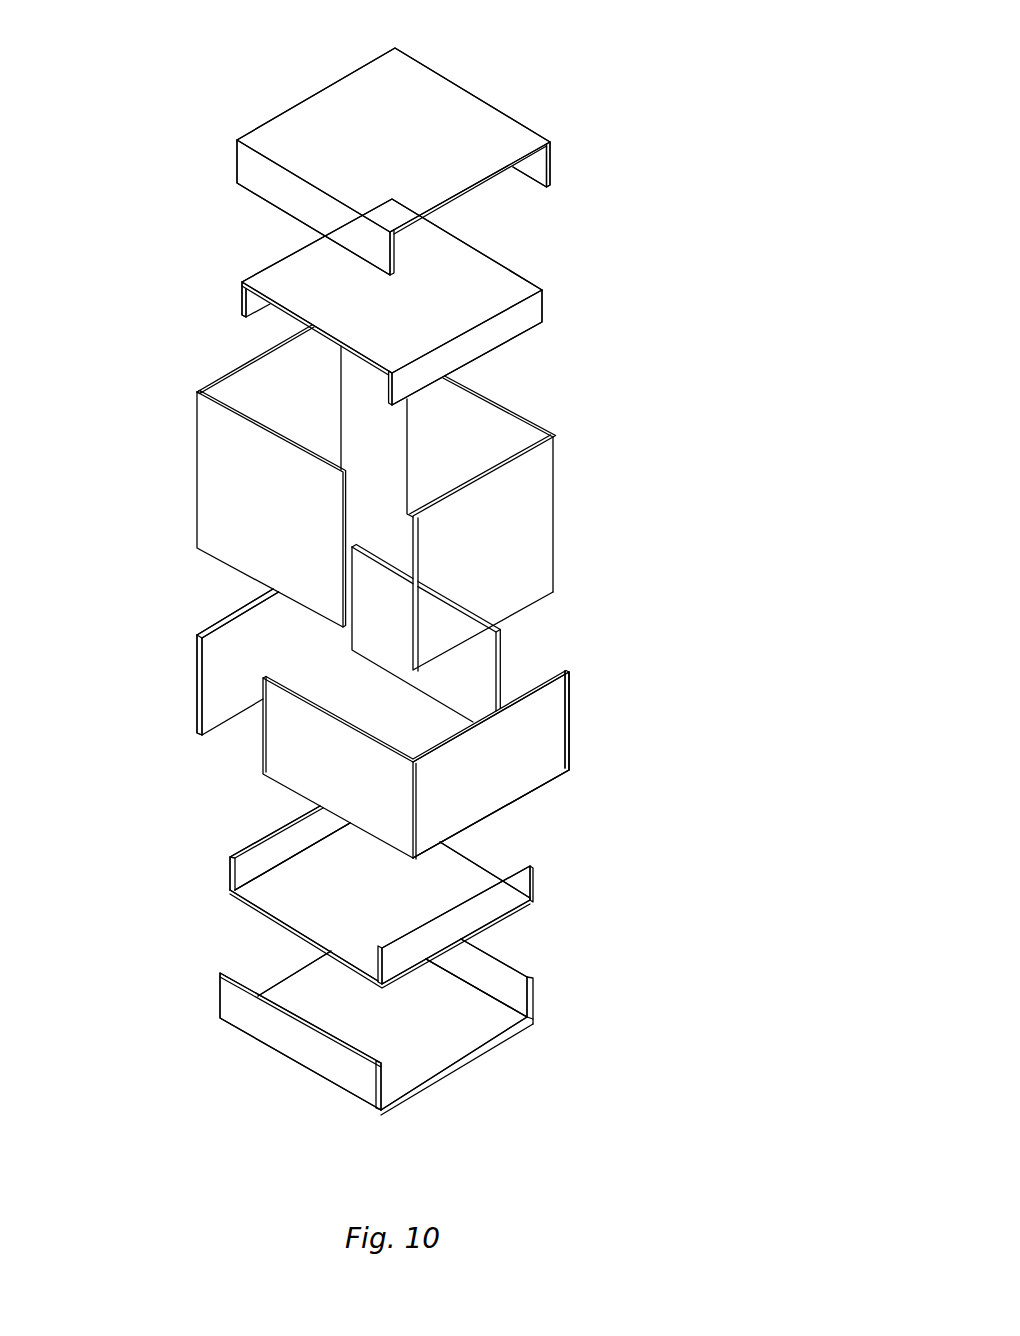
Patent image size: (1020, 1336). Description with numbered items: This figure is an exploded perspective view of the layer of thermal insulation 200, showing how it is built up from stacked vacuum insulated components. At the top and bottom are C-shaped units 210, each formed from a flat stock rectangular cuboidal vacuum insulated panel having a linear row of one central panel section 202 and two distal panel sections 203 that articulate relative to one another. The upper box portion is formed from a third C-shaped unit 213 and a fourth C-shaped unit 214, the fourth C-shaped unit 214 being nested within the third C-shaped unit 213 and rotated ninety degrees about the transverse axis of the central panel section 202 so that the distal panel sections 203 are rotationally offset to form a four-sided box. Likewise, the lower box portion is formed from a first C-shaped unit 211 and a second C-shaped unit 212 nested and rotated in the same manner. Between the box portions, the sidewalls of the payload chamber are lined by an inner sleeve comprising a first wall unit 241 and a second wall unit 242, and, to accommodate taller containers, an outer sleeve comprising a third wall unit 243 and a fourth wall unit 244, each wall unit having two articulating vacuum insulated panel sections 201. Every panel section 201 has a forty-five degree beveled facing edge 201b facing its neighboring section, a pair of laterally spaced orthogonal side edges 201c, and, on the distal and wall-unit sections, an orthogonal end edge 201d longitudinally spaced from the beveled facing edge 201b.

The layer of thermal insulation 200 is at (660, 40).
The C-shaped unit 210 is at (258, 93).
The central panel section 202 is at (474, 115).
The distal panel section 203 is at (248, 178).
The third C-shaped unit 213 is at (563, 103).
The fourth C-shaped unit 214 is at (585, 282).
The second C-shaped unit 212 is at (250, 822).
The first C-shaped unit 211 is at (315, 1098).
The first wall unit 241 is at (213, 481).
The second wall unit 242 is at (540, 543).
The third wall unit 243 is at (560, 750).
The fourth wall unit 244 is at (208, 658).
The vacuum insulated panel section 201 is at (208, 688).
The beveled facing edge 201b is at (350, 650).
The orthogonal side edge 201c is at (232, 618).
The orthogonal end edge 201d is at (200, 703).